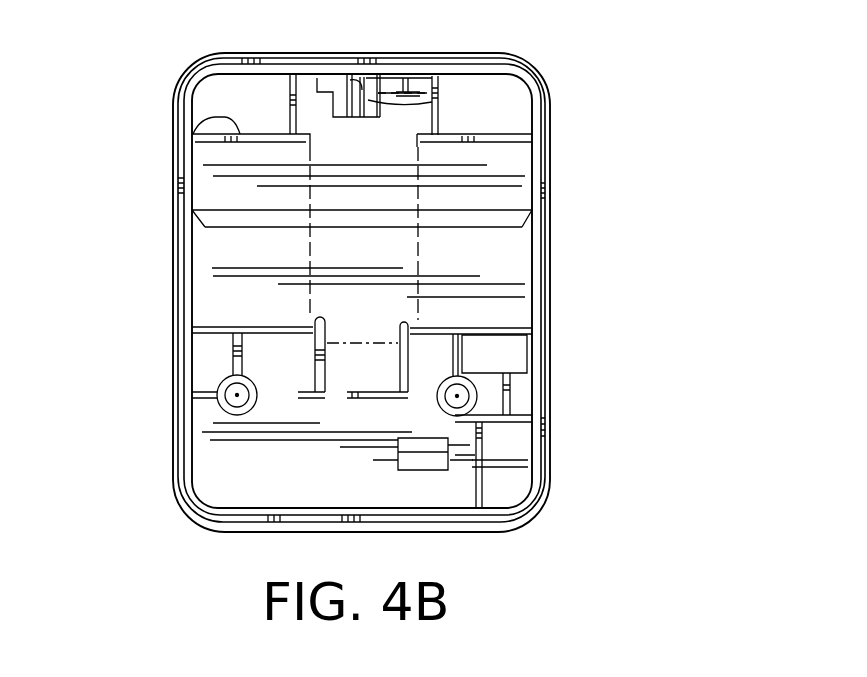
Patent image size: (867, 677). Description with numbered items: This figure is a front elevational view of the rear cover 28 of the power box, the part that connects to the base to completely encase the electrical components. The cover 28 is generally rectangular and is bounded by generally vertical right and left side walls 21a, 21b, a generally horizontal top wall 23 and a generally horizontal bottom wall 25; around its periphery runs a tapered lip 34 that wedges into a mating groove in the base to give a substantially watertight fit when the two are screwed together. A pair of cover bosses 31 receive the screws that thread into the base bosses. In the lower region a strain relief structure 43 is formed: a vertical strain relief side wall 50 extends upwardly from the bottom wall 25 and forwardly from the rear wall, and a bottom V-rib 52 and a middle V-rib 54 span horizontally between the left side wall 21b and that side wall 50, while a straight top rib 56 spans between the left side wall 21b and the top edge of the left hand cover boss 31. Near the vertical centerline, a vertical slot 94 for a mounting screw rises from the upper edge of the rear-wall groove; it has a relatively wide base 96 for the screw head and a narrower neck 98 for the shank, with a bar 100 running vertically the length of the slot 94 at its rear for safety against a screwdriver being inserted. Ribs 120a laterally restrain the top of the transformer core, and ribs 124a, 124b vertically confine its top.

The right side wall 21a is at (173, 283).
The left side wall 21b is at (550, 230).
The top wall 23 is at (483, 53).
The bottom wall 25 is at (465, 533).
The cover 28 is at (561, 89).
The cover bosses 31 is at (440, 405).
The tapered lip 34 is at (174, 176).
The strain relief structure 43 is at (553, 506).
The strain relief side wall 50 is at (478, 488).
The bottom V-rib 52 is at (522, 452).
The middle V-rib 54 is at (520, 412).
The top rib 56 is at (520, 372).
The vertical slot 94 is at (348, 143).
The base of slot 96 is at (378, 130).
The neck of slot 98 is at (438, 97).
The bar 100 is at (395, 40).
The rib 120a is at (193, 132).
The rib 124a is at (342, 76).
The rib 124b is at (417, 78).